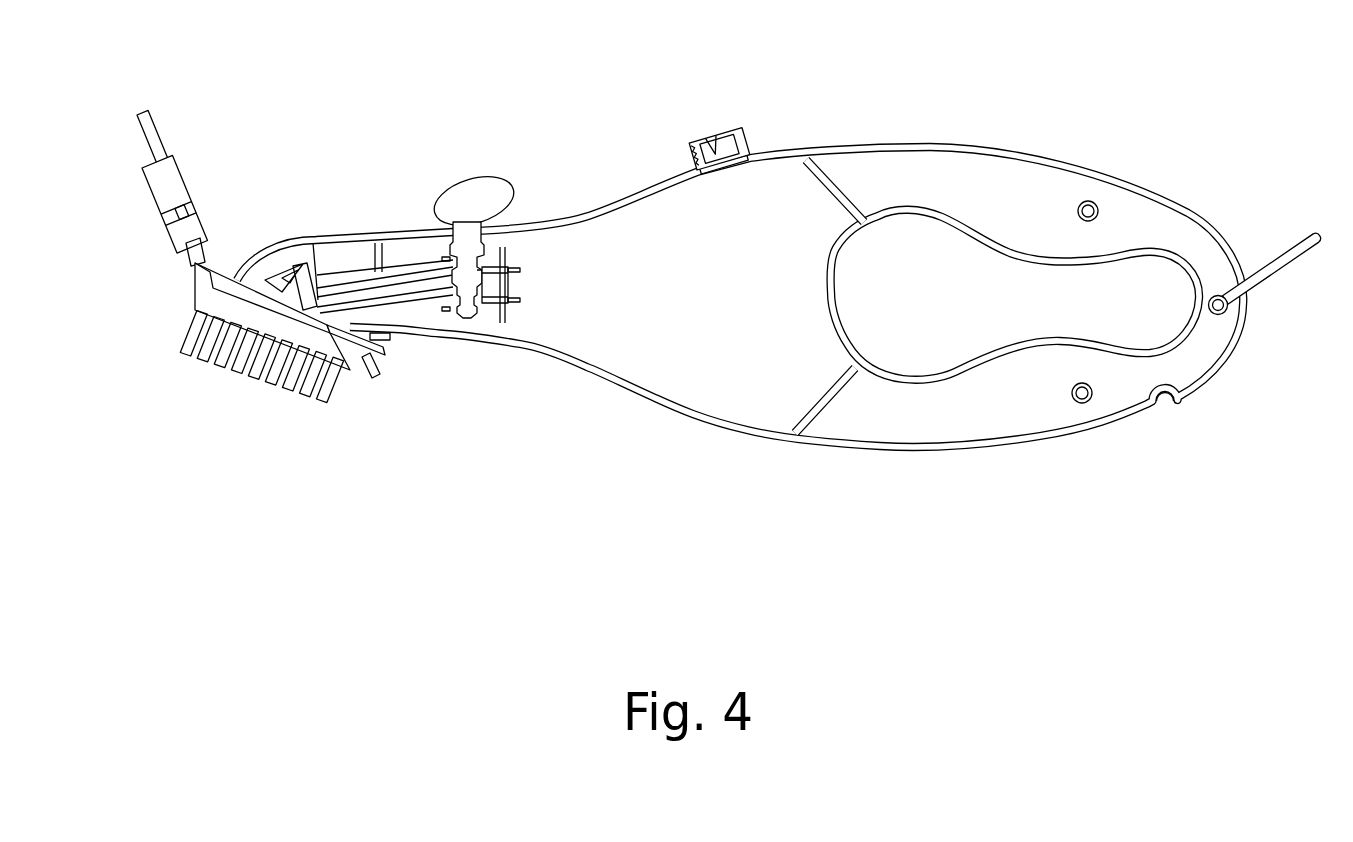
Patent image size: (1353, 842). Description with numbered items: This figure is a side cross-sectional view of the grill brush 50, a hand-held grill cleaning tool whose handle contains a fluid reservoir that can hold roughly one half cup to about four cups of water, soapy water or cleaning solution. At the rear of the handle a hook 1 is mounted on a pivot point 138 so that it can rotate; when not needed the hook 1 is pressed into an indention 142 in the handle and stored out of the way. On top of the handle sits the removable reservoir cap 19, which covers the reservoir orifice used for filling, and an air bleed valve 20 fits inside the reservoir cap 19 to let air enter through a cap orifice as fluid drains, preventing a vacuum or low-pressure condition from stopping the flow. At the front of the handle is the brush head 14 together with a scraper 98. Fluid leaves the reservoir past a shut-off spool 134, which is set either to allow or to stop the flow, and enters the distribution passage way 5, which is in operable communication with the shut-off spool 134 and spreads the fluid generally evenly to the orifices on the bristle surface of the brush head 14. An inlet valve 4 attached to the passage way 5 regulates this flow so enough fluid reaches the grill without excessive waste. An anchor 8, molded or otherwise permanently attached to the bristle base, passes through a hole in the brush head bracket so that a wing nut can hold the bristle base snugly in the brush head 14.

The hook 1 is at (1312, 230).
The inlet valve 4 is at (517, 317).
The distribution passage way 5 is at (480, 312).
The anchor 8 is at (370, 340).
The brush head 14 is at (195, 285).
The reservoir cap 19 is at (697, 168).
The air bleed valve 20 is at (747, 137).
The grill brush 50 is at (838, 495).
The scraper 98 is at (172, 166).
The shut-off spool 134 is at (470, 177).
The pivot point 138 is at (1241, 273).
The indention 142 is at (1167, 398).